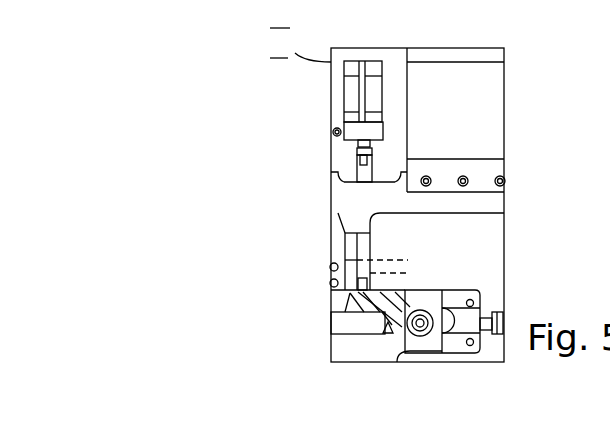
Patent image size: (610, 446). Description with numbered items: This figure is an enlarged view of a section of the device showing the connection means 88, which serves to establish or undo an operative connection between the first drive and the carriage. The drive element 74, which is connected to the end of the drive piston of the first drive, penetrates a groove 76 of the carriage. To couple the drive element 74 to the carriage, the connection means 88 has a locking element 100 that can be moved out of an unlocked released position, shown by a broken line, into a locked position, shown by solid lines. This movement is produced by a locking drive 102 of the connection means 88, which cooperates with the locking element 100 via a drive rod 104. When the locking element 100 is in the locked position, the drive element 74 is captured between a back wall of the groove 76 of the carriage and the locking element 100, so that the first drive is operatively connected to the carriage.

The connection means 88 is at (238, 175).
The locking drive 102 is at (345, 98).
The drive rod 104 is at (358, 250).
The locking element 100 is at (408, 290).
The groove 76 is at (362, 337).
The drive element 74 is at (422, 337).